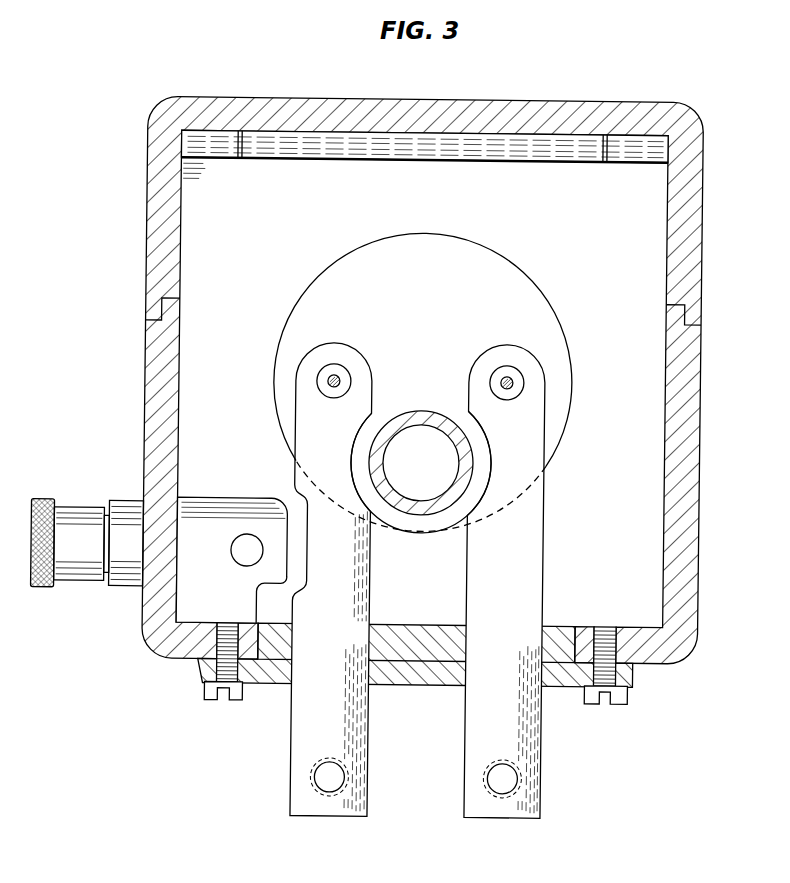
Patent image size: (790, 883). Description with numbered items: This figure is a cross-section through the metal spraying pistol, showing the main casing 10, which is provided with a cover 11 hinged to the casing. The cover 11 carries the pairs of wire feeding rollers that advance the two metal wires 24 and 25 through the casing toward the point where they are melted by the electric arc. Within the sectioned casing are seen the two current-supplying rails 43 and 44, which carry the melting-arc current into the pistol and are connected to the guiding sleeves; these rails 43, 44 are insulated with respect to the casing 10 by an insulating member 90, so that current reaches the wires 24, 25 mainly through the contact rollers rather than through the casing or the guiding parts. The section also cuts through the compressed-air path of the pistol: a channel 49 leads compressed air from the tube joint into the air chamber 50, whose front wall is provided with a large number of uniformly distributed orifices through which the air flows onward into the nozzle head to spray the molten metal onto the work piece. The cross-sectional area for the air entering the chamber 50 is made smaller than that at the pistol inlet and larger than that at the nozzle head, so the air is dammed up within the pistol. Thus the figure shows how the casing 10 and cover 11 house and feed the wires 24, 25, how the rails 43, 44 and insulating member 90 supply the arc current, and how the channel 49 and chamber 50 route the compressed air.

The main casing 10 is at (686, 512).
The cover 11 is at (683, 186).
The metal wire 24 is at (507, 376).
The metal wire 25 is at (334, 376).
The rail 43 is at (496, 806).
The rail 44 is at (341, 806).
The channel 49 is at (433, 510).
The air chamber 50 is at (500, 269).
The insulating member 90 is at (446, 686).